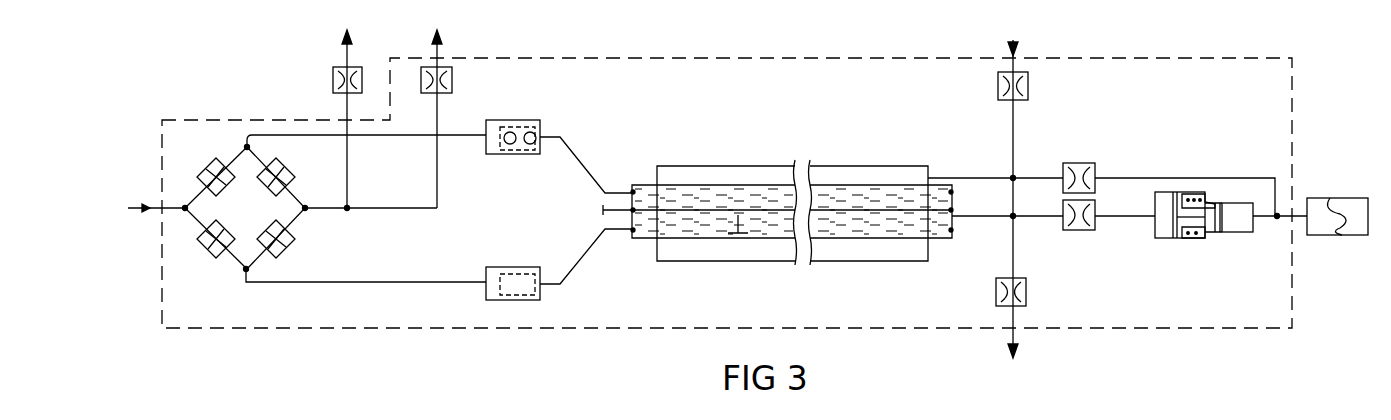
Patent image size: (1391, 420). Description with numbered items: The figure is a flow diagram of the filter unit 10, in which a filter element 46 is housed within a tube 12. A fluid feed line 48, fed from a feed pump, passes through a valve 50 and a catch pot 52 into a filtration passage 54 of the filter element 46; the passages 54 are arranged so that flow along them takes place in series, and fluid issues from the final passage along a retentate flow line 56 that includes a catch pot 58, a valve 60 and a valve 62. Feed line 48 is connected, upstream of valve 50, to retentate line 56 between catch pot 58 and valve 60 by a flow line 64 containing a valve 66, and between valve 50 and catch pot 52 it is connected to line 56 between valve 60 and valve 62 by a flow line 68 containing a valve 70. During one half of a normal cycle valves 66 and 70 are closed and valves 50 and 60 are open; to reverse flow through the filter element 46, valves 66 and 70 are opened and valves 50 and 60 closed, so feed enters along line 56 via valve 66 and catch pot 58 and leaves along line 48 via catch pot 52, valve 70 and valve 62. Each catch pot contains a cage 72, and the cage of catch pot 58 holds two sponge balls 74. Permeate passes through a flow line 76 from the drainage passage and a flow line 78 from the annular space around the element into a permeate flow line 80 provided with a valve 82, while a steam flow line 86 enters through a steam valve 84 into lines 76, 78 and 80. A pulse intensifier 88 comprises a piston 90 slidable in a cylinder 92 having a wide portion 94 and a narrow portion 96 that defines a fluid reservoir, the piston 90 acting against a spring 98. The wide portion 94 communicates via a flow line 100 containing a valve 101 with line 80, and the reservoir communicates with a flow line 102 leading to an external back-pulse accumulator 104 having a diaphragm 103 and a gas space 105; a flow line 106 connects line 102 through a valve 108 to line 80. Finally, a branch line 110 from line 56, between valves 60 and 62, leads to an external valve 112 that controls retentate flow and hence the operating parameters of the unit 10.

The filter unit 10 is at (912, 40).
The tube 12 is at (845, 178).
The filter element 46 is at (940, 184).
The fluid feed line 48 is at (135, 200).
The valve 50 is at (190, 256).
The catch pot 52 is at (524, 301).
The filtration passage 54 is at (738, 238).
The retentate flow line 56 is at (300, 200).
The catch pot 58 is at (528, 156).
The valve 60 is at (288, 158).
The valve 62 is at (452, 82).
The flow line 64 is at (240, 155).
The valve 66 is at (198, 150).
The flow line 68 is at (298, 230).
The valve 70 is at (295, 258).
The cage 72 is at (504, 268).
The sponge balls 74 is at (530, 132).
The flow line 76 is at (990, 220).
The flow line 78 is at (985, 176).
The permeate flow line 80 is at (1016, 256).
The valve 82 is at (996, 290).
The steam valve 84 is at (1028, 86).
The steam flow line 86 is at (1016, 133).
The pulse intensifier 88 is at (1176, 262).
The piston 90 is at (1205, 236).
The cylinder 92 is at (1232, 176).
The wide portion 94 is at (1168, 194).
The narrow portion 96 is at (1238, 233).
The spring 98 is at (1196, 194).
The flow line 100 is at (1137, 232).
The valve 101 is at (1080, 232).
The flow line 102 is at (1280, 214).
The diaphragm 103 is at (1332, 200).
The back-pulse accumulator 104 is at (1328, 250).
The gas space 105 is at (1362, 238).
The flow line 106 is at (1135, 178).
The valve 108 is at (1078, 160).
The branch line 110 is at (350, 208).
The external valve 112 is at (333, 76).